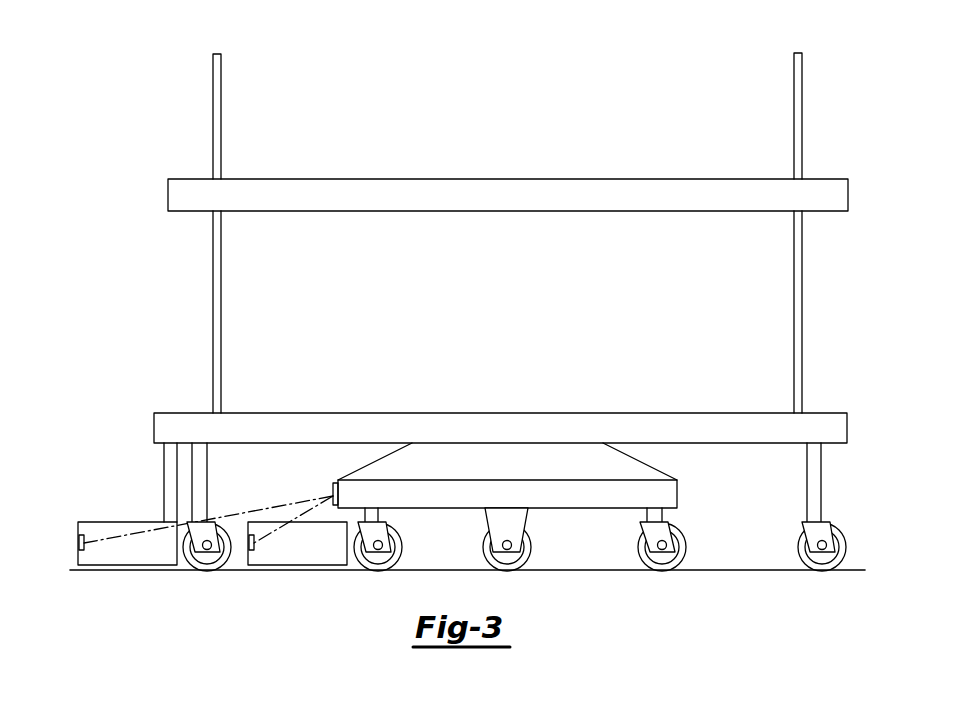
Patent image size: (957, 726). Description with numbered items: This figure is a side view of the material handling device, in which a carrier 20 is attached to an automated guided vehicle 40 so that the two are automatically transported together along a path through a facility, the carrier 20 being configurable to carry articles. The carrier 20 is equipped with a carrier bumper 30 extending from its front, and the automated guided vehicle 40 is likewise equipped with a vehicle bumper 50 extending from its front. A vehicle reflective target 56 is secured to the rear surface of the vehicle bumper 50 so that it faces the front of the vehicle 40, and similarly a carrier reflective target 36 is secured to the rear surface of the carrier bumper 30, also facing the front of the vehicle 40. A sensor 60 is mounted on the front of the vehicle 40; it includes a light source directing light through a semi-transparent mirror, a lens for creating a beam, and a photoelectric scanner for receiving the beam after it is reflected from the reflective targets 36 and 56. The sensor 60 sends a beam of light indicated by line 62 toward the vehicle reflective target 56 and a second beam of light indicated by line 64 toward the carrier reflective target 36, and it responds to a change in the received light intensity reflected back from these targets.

The carrier 20 is at (794, 108).
The carrier bumper 30 is at (78, 530).
The carrier reflective target 36 is at (85, 545).
The automated guided vehicle 40 is at (512, 467).
The vehicle bumper 50 is at (327, 545).
The vehicle reflective target 56 is at (256, 545).
The sensor 60 is at (333, 492).
The line indicating beam of light 62 is at (283, 525).
The line indicating second beam of light 64 is at (120, 530).